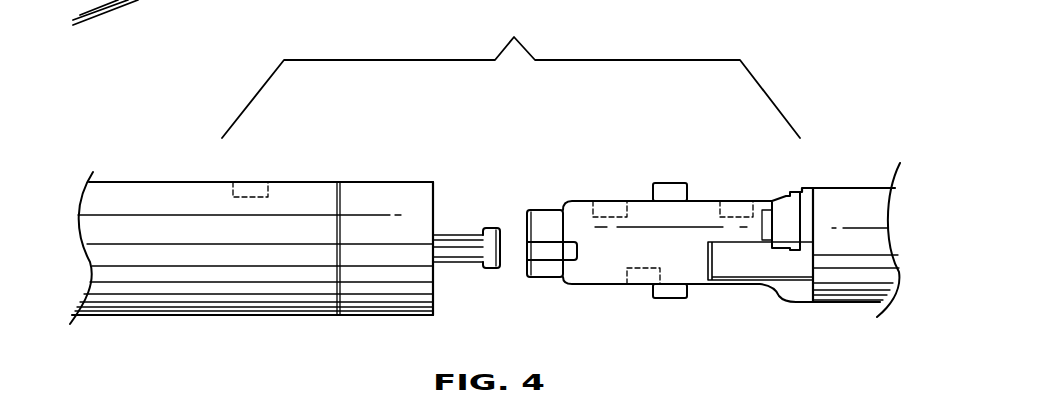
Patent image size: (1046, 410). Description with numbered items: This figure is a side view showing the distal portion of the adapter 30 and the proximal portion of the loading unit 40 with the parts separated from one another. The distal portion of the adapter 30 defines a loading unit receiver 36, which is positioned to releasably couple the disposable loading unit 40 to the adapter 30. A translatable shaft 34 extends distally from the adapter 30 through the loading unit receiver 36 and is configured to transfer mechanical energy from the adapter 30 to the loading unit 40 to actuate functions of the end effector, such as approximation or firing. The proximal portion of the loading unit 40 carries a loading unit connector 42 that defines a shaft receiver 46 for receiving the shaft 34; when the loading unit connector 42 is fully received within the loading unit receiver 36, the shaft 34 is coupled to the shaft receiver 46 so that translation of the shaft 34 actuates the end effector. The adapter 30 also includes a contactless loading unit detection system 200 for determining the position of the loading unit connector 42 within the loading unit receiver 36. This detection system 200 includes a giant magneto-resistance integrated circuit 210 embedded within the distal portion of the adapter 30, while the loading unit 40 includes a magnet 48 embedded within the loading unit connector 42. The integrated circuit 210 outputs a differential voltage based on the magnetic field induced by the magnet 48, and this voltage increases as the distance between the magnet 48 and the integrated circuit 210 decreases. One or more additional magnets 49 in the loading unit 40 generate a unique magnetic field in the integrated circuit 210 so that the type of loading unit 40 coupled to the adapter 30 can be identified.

The contactless loading unit detection system 200 is at (511, 74).
The adapter 30 is at (118, 182).
The giant magneto-resistance integrated circuit (GMR IC) 210 is at (254, 188).
The loading unit receiver 36 is at (433, 182).
The translatable shaft 34 is at (462, 248).
The shaft receiver 46 is at (522, 231).
The loading unit connector 42 is at (704, 201).
The magnet 48 is at (607, 210).
The additional magnets 49 is at (737, 201).
The loading unit 40 is at (840, 188).